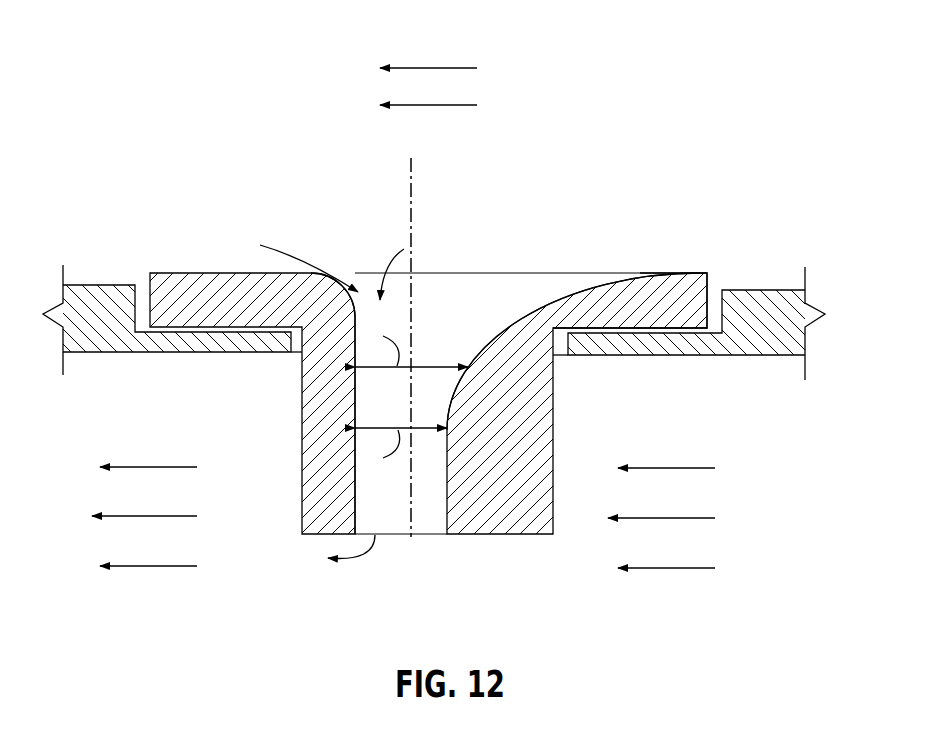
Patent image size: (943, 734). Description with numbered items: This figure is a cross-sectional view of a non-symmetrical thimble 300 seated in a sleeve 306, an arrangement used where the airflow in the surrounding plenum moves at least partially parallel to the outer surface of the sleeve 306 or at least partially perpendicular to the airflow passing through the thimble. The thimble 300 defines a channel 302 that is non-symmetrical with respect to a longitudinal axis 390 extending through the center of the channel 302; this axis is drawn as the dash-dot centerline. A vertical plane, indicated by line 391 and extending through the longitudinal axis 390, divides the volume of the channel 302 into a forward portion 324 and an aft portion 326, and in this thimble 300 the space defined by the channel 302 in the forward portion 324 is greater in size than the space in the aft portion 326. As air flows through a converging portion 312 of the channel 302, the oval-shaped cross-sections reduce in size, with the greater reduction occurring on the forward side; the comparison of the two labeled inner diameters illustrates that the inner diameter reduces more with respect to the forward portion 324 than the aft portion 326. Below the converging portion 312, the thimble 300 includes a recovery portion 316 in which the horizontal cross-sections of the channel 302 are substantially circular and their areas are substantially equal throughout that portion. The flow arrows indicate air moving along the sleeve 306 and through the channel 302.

The thimble 300 is at (197, 65).
The channel 302 is at (465, 321).
The sleeve 306 is at (758, 295).
The converging portion 312 is at (562, 295).
The recovery portion 316 is at (355, 505).
The forward portion 324 is at (594, 257).
The aft portion 326 is at (338, 252).
The longitudinal axis 390 is at (415, 178).
The line indicating vertical plane 391 is at (476, 333).